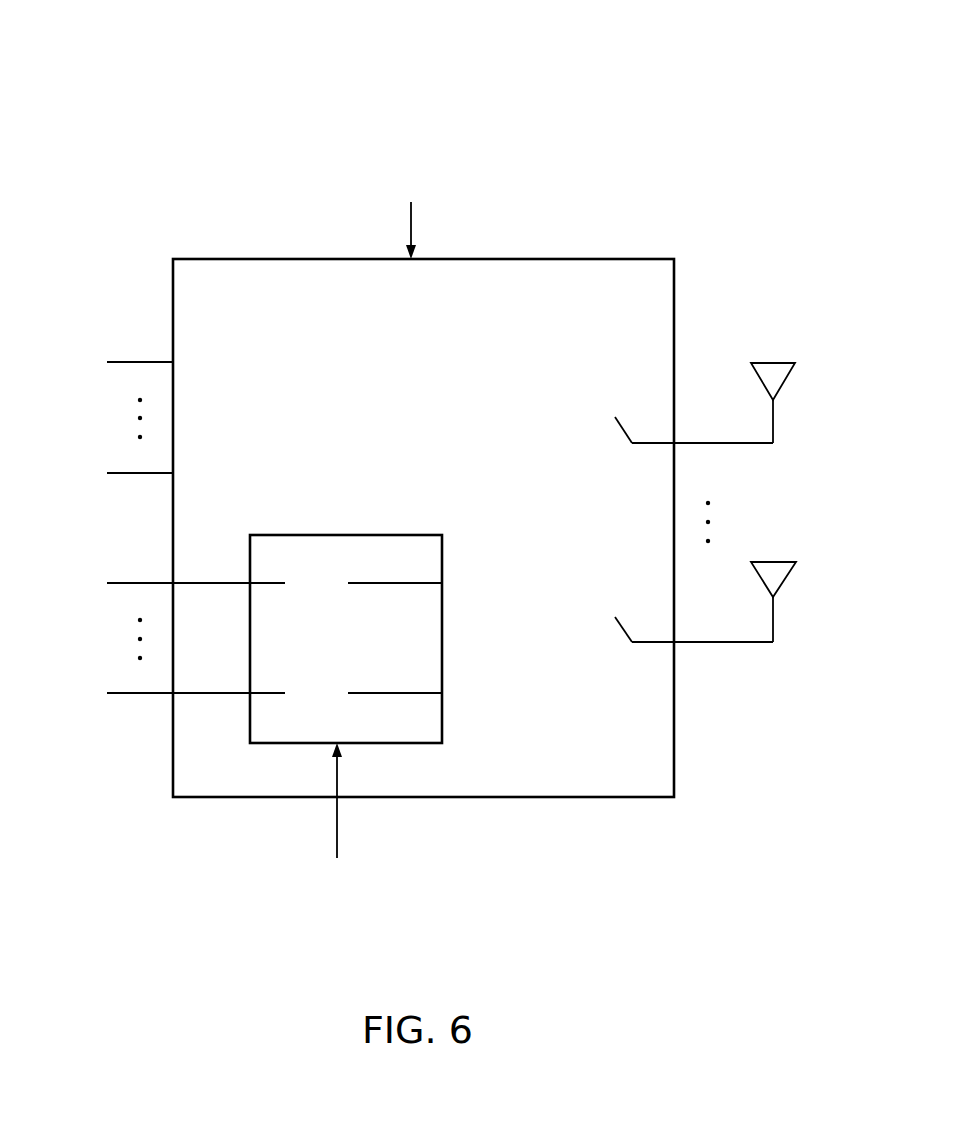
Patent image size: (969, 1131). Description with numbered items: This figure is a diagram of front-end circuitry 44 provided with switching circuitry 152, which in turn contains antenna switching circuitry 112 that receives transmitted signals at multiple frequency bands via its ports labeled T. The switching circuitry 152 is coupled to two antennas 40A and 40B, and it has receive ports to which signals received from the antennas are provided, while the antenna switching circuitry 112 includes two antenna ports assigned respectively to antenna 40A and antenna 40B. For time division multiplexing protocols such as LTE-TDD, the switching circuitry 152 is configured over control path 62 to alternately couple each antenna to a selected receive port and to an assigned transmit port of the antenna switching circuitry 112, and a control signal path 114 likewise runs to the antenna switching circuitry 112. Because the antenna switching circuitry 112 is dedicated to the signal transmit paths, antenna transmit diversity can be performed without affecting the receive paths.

The front-end circuitry 44 is at (715, 104).
The control path 62 is at (411, 222).
The switching circuitry 152 is at (552, 258).
The antenna switching circuitry 112 is at (340, 534).
The control signal path 114 is at (337, 822).
The antenna 40A is at (773, 362).
The antenna 40B is at (773, 562).